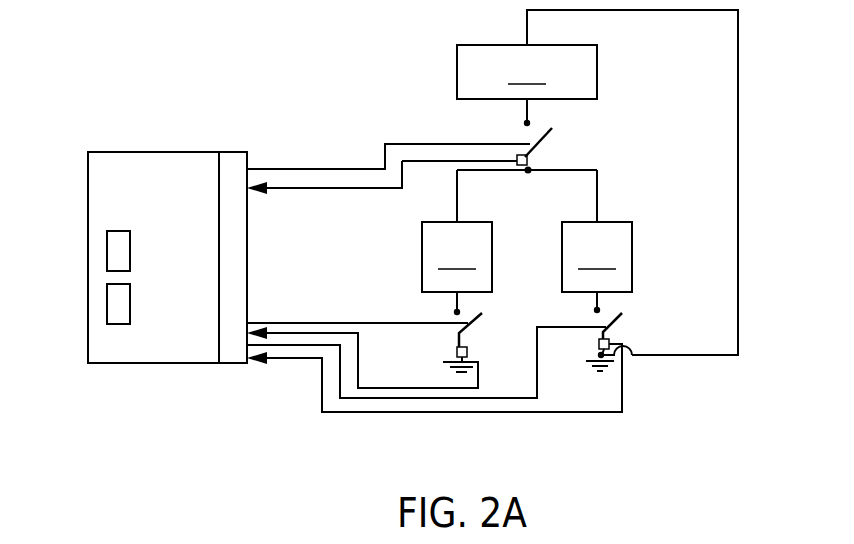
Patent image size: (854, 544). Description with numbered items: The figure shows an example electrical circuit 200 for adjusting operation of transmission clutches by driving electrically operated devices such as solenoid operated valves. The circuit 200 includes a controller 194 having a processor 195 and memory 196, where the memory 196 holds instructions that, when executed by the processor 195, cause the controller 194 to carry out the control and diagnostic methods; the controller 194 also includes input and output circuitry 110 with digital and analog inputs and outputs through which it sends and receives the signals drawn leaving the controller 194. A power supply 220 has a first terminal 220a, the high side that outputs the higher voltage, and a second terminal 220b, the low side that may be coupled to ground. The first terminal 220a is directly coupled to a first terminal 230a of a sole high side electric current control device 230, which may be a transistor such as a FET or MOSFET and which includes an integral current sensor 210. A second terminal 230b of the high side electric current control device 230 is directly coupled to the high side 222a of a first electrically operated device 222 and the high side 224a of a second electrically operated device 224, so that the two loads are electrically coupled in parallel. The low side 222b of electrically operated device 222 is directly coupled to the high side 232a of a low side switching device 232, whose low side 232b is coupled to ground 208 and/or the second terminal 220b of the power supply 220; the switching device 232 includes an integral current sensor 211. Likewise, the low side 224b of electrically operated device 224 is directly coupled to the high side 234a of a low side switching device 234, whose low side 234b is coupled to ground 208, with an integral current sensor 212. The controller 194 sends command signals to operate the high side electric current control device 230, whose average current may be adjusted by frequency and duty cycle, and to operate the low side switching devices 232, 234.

The electrical circuit 200 is at (106, 54).
The input and output circuitry 110 is at (233, 160).
The controller 194 is at (112, 353).
The processor 195 is at (112, 306).
The memory 196 is at (117, 249).
The power supply 220 is at (527, 72).
The first terminal 220a is at (529, 102).
The second terminal 220b is at (527, 36).
The high side electric current control device 230 is at (570, 139).
The first terminal 230a is at (525, 124).
The second terminal 230b is at (527, 172).
The current sensor 210 is at (528, 159).
The electrically operated device 222 is at (457, 257).
The high side 222a is at (452, 222).
The low side 222b is at (452, 290).
The electrically operated device 224 is at (597, 257).
The high side 224a is at (603, 222).
The low side 224b is at (604, 290).
The low side switching device 232 is at (485, 322).
The high side 232a is at (453, 311).
The low side 232b is at (457, 350).
The low side switching device 234 is at (642, 318).
The high side 234a is at (594, 311).
The low side 234b is at (599, 354).
The current sensor 211 is at (468, 350).
The current sensor 212 is at (610, 341).
The ground 208 is at (443, 363).